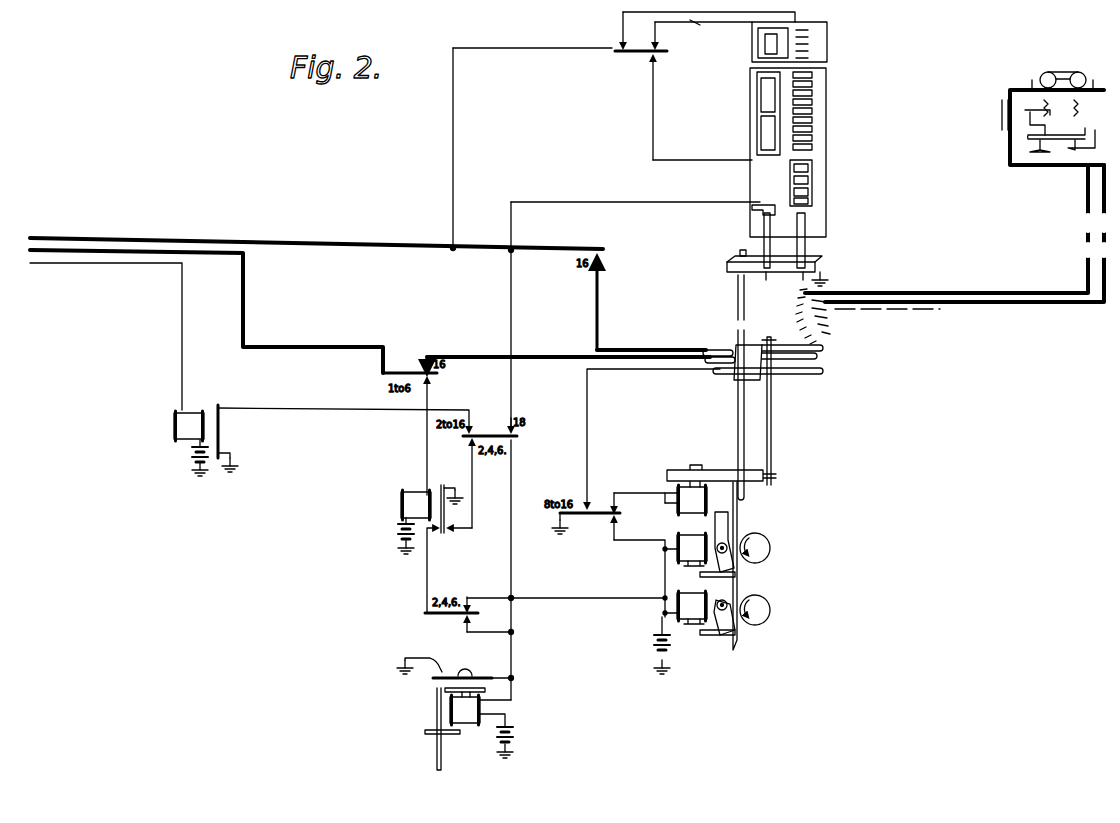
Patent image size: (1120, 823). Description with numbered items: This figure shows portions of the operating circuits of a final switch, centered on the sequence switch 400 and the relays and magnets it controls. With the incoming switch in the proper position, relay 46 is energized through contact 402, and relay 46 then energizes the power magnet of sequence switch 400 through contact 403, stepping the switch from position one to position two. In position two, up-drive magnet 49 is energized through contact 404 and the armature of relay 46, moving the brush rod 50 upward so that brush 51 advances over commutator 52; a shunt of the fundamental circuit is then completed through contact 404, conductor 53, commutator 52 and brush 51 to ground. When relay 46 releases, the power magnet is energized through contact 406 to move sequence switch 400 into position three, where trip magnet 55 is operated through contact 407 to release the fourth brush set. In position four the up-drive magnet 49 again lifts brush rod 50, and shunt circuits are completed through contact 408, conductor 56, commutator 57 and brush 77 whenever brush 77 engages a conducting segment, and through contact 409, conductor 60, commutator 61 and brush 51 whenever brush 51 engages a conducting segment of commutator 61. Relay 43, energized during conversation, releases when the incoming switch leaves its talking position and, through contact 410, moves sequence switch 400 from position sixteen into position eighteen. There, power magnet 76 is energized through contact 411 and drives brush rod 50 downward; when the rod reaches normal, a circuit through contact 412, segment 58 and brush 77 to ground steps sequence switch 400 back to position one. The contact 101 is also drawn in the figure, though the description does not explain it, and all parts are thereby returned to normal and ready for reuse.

The relay 43 is at (191, 443).
The relay 46 is at (414, 522).
The up-drive magnet 49 is at (706, 613).
The brush rod 50 is at (737, 416).
The brush 51 is at (810, 250).
The commutator 52 is at (814, 190).
The conductor 53 is at (654, 130).
The trip magnet 55 is at (692, 500).
The conductor 56 is at (698, 24).
The commutator 57 is at (747, 58).
The segment 58 is at (752, 212).
The conductor 60 is at (622, 12).
The commutator 61 is at (814, 92).
The power magnet 76 is at (706, 555).
The brush 77 is at (740, 258).
The contact 101 is at (450, 672).
The sequence switch 400 is at (453, 729).
The contact 402 is at (437, 380).
The contact 403 is at (480, 623).
The contact 404 is at (648, 62).
The contact 406 is at (462, 445).
The contact 407 is at (610, 505).
The contact 408 is at (690, 34).
The contact 409 is at (545, 30).
The contact 410 is at (470, 433).
The contact 411 is at (618, 521).
The contact 412 is at (520, 437).